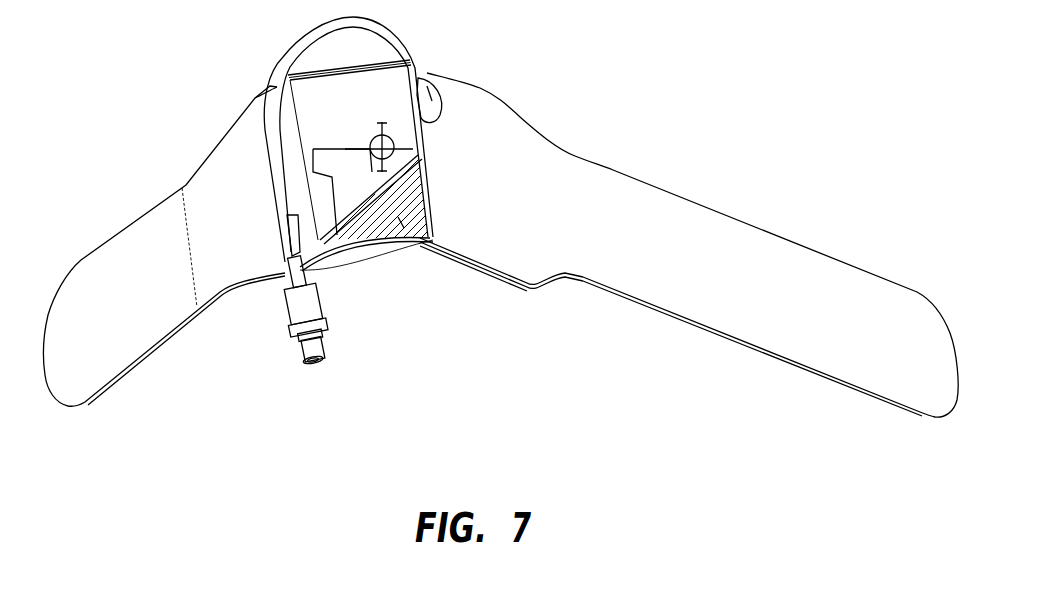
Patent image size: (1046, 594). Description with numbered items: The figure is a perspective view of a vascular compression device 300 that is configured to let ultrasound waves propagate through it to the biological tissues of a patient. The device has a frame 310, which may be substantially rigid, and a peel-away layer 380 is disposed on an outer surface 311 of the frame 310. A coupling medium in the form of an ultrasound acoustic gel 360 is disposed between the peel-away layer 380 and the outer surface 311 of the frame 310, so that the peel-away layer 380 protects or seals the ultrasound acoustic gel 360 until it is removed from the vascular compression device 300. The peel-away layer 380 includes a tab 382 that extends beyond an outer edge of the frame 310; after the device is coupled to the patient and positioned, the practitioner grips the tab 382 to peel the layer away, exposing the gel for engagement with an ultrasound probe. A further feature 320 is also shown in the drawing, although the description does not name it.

The vascular compression device 300 is at (371, 300).
The frame 310 is at (356, 252).
The outer surface 311 is at (414, 168).
The connector plug 320 is at (380, 258).
The ultrasound acoustic gel 360 is at (398, 217).
The peel-away layer 380 is at (378, 95).
The tab 382 is at (318, 157).